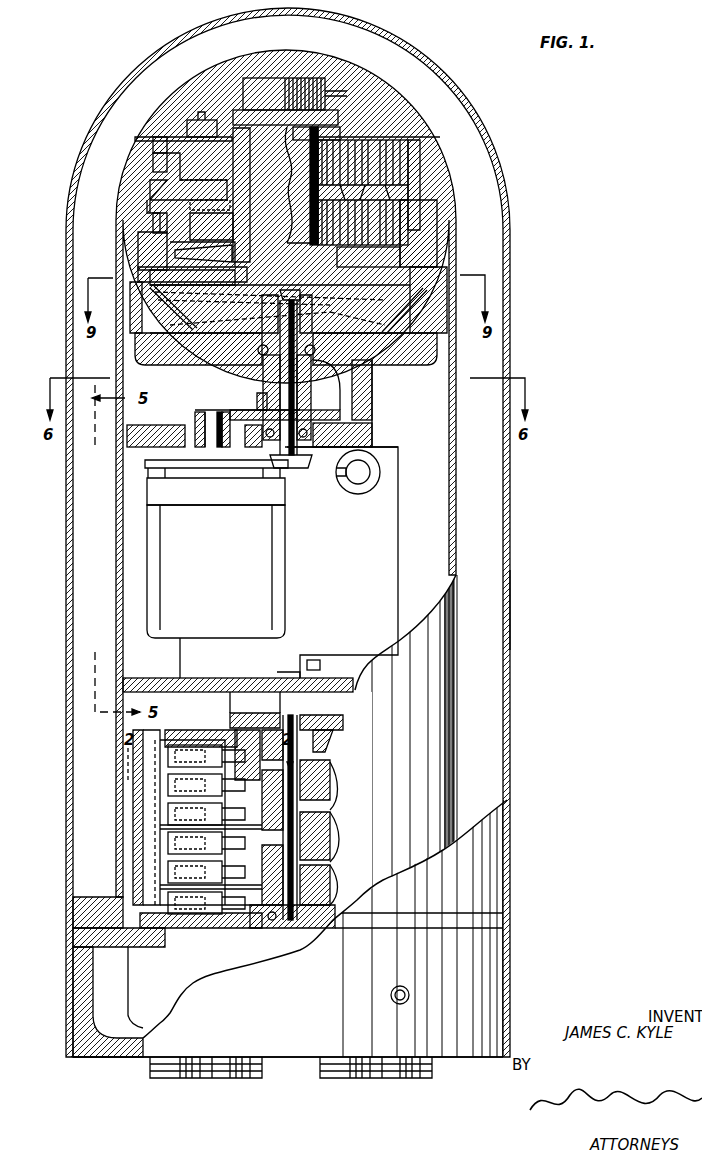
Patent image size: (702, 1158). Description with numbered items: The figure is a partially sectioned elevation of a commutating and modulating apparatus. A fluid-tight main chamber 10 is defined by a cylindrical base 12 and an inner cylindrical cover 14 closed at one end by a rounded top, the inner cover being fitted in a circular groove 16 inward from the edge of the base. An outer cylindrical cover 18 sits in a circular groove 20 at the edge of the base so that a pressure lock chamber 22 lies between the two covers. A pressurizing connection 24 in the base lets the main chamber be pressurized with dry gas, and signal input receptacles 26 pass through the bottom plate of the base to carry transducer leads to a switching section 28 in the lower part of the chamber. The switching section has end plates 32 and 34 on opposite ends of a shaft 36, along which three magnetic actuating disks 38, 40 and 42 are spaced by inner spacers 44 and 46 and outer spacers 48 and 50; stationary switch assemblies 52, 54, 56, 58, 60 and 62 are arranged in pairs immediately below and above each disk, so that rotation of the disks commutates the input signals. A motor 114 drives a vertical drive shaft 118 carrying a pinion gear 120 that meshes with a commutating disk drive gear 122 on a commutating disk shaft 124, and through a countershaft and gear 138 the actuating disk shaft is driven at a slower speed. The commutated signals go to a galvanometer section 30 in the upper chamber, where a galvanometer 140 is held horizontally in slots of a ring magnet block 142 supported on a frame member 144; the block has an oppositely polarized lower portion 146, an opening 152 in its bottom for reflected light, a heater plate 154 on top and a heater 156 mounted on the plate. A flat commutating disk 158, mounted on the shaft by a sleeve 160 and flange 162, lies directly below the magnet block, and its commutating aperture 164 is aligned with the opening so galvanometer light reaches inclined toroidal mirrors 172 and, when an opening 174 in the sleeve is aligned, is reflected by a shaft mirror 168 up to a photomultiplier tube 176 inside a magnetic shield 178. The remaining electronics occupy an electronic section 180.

The main chamber 10 is at (450, 534).
The cylindrical base 12 is at (80, 968).
The inner cylindrical cover 14 is at (506, 481).
The circular groove 16 is at (90, 922).
The outer cylindrical cover 18 is at (510, 604).
The circular groove 20 is at (110, 908).
The pressure lock chamber 22 is at (478, 660).
The pressurizing connection 24 is at (410, 995).
The signal input receptacles 26 is at (195, 1080).
The switching section 28 is at (140, 818).
The galvanometer section 30 is at (150, 165).
The end plate 32 is at (185, 730).
The end plate 34 is at (213, 930).
The shaft 36 is at (318, 790).
The magnetic actuating disk 38 is at (165, 770).
The magnetic actuating disk 40 is at (165, 827).
The magnetic actuating disk 42 is at (160, 887).
The inner spacer 44 is at (330, 818).
The inner spacer 46 is at (320, 858).
The outer spacer 48 is at (325, 760).
The outer spacer 50 is at (325, 898).
The switch assembly 52 is at (212, 905).
The switch assembly 54 is at (165, 872).
The switch assembly 56 is at (165, 848).
The switch assembly 58 is at (165, 815).
The switch assembly 60 is at (165, 792).
The switch assembly 62 is at (175, 748).
The motor 114 is at (160, 555).
The drive shaft 118 is at (215, 455).
The pinion gear 120 is at (210, 410).
The commutating disk drive gear 122 is at (345, 416).
The commutating disk shaft 124 is at (293, 385).
The gear 138 is at (248, 713).
The galvanometer 140 is at (152, 185).
The ring magnet block 142 is at (398, 158).
The frame member 144 is at (350, 160).
The lower portion 146 is at (360, 245).
The opening 152 is at (165, 237).
The heater plate 154 is at (158, 162).
The heater 156 is at (190, 130).
The commutating disk 158 is at (170, 288).
The sleeve 160 is at (318, 322).
The flange 162 is at (318, 300).
The commutating aperture 164 is at (150, 298).
The shaft mirror 168 is at (318, 310).
The toroidal mirrors 172 is at (142, 338).
The opening 174 is at (265, 322).
The photomultiplier tube 176 is at (303, 225).
The magnetic shield 178 is at (268, 183).
The electronic section 180 is at (375, 572).